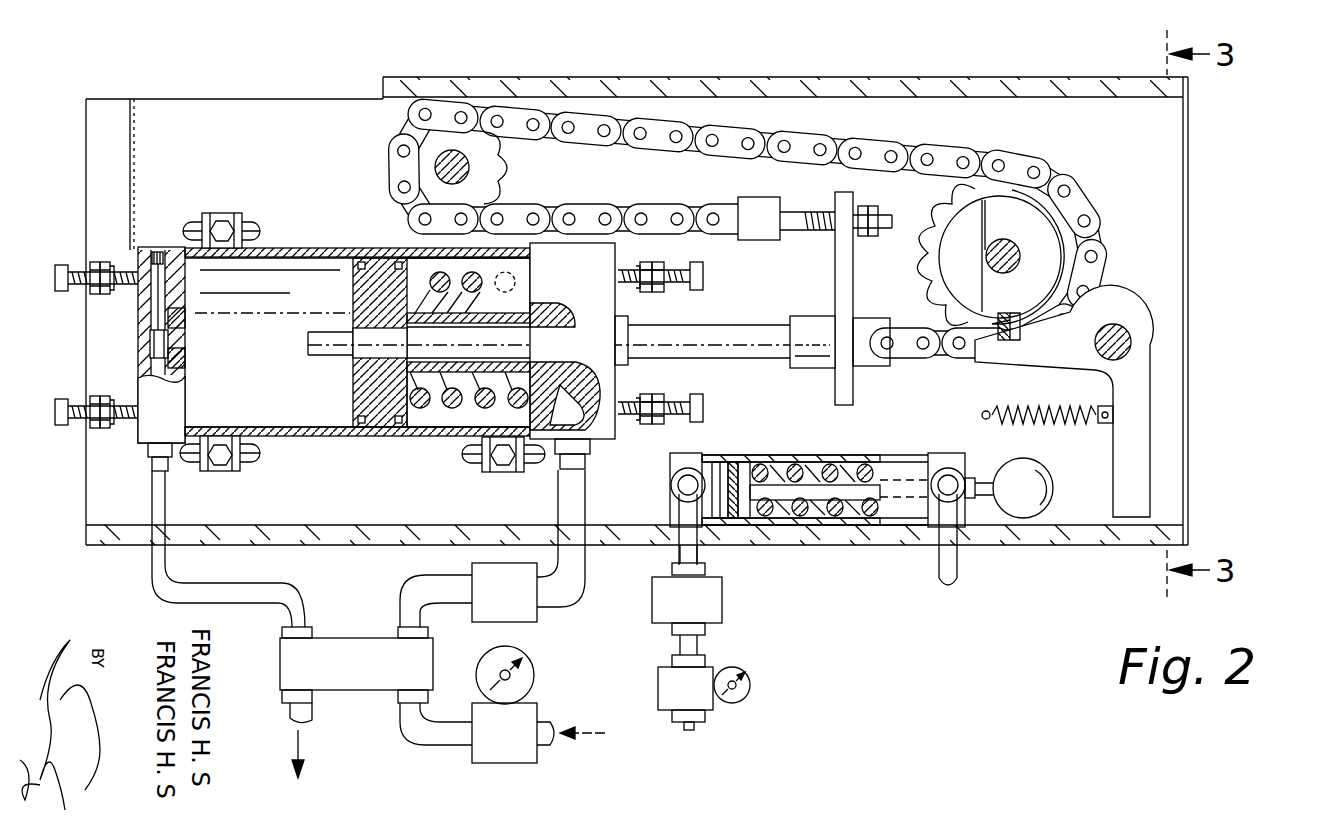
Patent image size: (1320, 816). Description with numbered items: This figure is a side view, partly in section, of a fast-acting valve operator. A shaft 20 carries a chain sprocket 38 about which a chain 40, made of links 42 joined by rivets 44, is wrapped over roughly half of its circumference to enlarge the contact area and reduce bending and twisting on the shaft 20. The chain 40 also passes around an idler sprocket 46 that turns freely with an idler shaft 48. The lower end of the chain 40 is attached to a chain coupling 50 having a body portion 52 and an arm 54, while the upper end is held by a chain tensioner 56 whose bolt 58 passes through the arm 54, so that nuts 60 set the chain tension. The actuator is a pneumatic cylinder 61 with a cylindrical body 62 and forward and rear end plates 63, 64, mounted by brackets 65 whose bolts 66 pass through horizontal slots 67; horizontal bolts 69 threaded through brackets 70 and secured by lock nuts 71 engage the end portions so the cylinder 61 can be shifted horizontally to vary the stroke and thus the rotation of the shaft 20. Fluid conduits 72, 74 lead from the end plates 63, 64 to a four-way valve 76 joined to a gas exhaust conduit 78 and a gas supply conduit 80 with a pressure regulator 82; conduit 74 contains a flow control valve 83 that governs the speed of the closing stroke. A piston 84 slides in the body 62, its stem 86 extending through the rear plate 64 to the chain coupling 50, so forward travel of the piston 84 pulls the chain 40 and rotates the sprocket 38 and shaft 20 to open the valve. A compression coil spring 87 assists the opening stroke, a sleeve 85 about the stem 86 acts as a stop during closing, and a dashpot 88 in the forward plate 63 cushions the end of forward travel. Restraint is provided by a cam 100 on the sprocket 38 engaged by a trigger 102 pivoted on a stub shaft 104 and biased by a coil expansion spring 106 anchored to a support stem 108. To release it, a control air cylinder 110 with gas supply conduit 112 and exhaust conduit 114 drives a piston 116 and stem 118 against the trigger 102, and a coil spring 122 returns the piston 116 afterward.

The shaft 20 is at (1012, 262).
The chain sprocket 38 is at (1015, 229).
The chain 40 is at (1072, 170).
The links 42 is at (1000, 170).
The rivets 44 is at (930, 160).
The idler sprocket 46 is at (505, 185).
The idler shaft 48 is at (462, 160).
The chain coupling 50 is at (825, 378).
The body portion 52 is at (815, 318).
The arm 54 is at (845, 285).
The chain tensioner 56 is at (780, 200).
The bolt 58 is at (822, 230).
The nuts 60 is at (872, 208).
The cylinder 61 is at (325, 445).
The cylindrical body 62 is at (298, 250).
The forward end plate 63 is at (175, 424).
The rear end plate 64 is at (578, 282).
The mounting brackets 65 is at (236, 222).
The bolts 66 is at (222, 225).
The horizontal slots 67 is at (252, 232).
The horizontal bolts 69 is at (58, 280).
The brackets 70 is at (95, 262).
The lock nuts 71 is at (105, 262).
The fluid conduit 72 is at (150, 580).
The fluid conduit 74 is at (578, 586).
The four-way valve 76 is at (368, 676).
The gas exhaust conduit 78 is at (315, 728).
The gas supply conduit 80 is at (432, 746).
The pressure regulator 82 is at (540, 710).
The flow control valve 83 is at (535, 620).
The piston 84 is at (352, 314).
The sleeve 85 is at (370, 284).
The stem 86 is at (340, 355).
The compression coil spring 87 is at (420, 408).
The dashpot 88 is at (112, 308).
The cam 100 is at (1065, 320).
The trigger 102 is at (1140, 380).
The stub shaft 104 is at (1128, 340).
The coil expansion spring 106 is at (1060, 418).
The support stem 108 is at (988, 410).
The control air cylinder 110 is at (825, 456).
The gas supply conduit 112 is at (697, 555).
The exhaust conduit 114 is at (957, 580).
The piston 116 is at (735, 520).
The stem 118 is at (850, 502).
The coil spring 122 is at (862, 500).